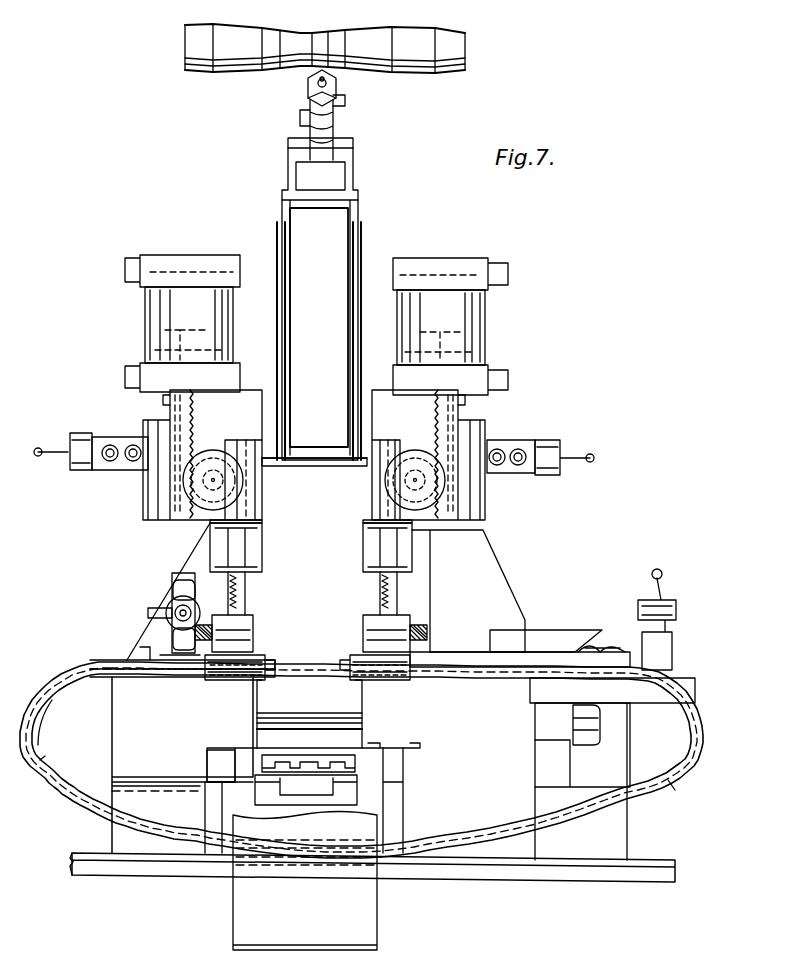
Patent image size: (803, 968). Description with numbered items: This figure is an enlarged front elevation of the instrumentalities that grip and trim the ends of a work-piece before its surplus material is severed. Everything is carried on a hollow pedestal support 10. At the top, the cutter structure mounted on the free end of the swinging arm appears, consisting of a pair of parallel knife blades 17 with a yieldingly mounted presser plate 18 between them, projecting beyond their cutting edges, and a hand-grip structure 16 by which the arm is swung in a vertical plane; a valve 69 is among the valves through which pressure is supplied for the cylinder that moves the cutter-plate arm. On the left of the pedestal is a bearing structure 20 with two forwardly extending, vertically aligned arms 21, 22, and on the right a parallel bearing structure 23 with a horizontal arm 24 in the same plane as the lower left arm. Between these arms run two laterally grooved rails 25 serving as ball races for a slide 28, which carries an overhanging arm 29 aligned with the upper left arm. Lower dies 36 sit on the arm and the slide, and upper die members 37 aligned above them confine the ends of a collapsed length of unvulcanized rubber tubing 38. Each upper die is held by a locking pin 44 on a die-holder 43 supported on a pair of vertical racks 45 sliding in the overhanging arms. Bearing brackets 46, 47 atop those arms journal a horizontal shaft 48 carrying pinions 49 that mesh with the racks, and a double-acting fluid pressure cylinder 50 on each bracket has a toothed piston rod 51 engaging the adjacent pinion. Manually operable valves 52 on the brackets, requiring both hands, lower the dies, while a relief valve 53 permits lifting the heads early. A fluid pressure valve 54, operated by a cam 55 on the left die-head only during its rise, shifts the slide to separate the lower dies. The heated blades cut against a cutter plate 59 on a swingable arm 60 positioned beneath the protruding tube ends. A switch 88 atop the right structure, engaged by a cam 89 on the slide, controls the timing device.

The pedestal support 10 is at (75, 875).
The hand-grip structure 16 is at (400, 72).
The knife blades 17 is at (280, 222).
The presser plate 18 is at (342, 232).
The bearing structure 20 is at (118, 833).
The arm 21 is at (222, 538).
The arm 22 is at (127, 716).
The bearing structure 23 is at (635, 846).
The horizontal arm 24 is at (575, 777).
The rails 25 is at (303, 713).
The slide 28 is at (445, 665).
The overhanging arm 29 is at (440, 530).
The lower dies 36 is at (309, 714).
The upper die members 37 is at (262, 648).
The rubber tubing 38 is at (665, 795).
The die-holder 43 is at (250, 617).
The locking pin 44 is at (252, 628).
The racks 45 is at (245, 595).
The bearing bracket 46 is at (243, 398).
The bearing bracket 47 is at (250, 503).
The horizontal shaft 48 is at (175, 483).
The pinions 49 is at (365, 518).
The fluid pressure cylinder 50 is at (178, 262).
The piston rod 51 is at (193, 432).
The manually operable valves 52 is at (55, 442).
The relief valve 53 is at (665, 600).
The fluid pressure valve 54 is at (178, 608).
The cam 55 is at (185, 633).
The cutter plate 59 is at (295, 770).
The swingable arm 60 is at (340, 795).
The valve 69 is at (315, 82).
The switch 88 is at (628, 650).
The cam 89 is at (545, 642).